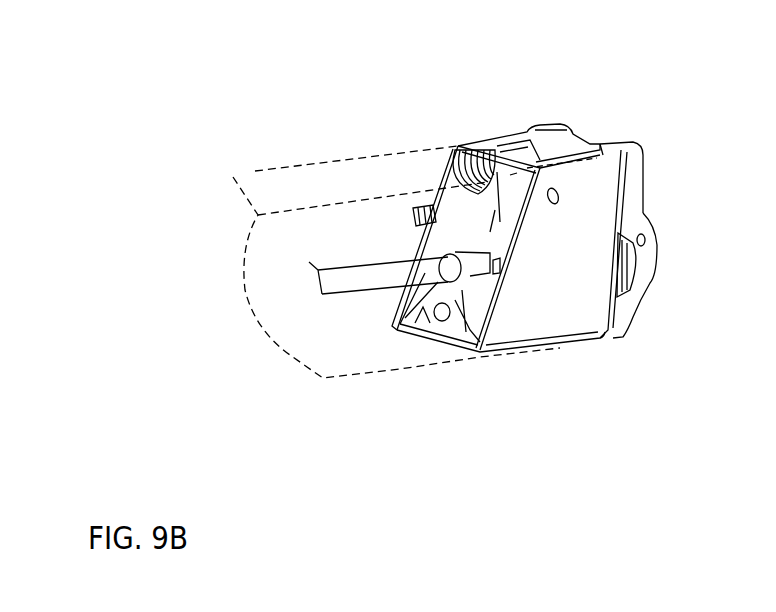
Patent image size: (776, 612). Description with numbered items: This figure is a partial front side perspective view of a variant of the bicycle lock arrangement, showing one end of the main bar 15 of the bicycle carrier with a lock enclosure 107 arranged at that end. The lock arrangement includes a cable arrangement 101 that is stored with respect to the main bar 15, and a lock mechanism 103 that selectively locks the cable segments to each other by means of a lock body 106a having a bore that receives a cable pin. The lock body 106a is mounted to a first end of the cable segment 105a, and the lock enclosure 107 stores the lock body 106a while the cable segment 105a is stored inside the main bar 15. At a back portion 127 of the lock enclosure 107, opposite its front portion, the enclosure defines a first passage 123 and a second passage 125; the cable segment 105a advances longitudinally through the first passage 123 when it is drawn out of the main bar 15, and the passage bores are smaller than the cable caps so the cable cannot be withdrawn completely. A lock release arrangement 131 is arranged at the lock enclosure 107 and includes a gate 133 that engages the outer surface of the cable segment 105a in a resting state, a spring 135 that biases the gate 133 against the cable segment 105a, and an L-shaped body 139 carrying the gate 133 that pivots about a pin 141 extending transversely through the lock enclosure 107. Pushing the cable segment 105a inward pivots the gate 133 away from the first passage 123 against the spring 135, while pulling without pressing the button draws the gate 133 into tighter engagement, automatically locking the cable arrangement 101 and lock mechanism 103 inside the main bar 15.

The main bar 15 is at (245, 173).
The cable arrangement 101 is at (338, 256).
The lock mechanism 103 is at (644, 290).
The cable segment 105a is at (350, 287).
The lock body 106a is at (633, 298).
The lock enclosure 107 is at (555, 292).
The first passage 123 is at (417, 262).
The second passage 125 is at (429, 338).
The back portion 127 is at (417, 157).
The lock release arrangement 131 is at (593, 132).
The gate 133 is at (490, 226).
The spring 135 is at (470, 142).
The L-shaped body 139 is at (493, 143).
The pin 141 is at (556, 205).